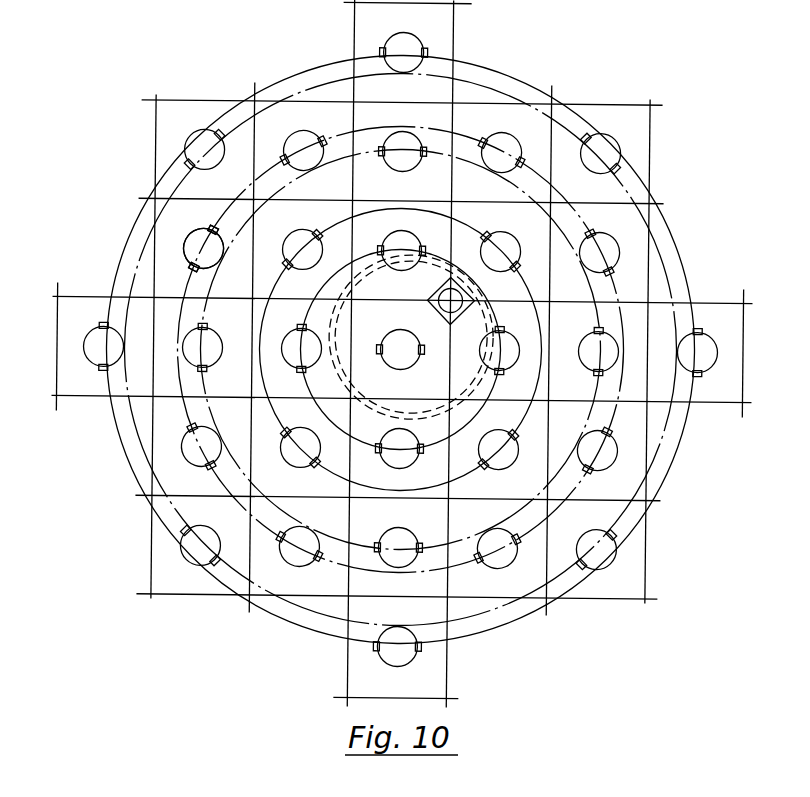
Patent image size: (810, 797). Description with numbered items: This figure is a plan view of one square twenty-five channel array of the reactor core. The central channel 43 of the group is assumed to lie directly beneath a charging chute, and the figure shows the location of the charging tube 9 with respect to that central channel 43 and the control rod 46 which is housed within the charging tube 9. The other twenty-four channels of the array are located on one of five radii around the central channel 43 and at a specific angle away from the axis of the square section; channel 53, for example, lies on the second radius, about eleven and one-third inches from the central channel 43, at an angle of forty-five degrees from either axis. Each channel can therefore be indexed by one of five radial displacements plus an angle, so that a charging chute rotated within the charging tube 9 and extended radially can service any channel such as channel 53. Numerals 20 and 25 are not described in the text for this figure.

The tube 20 is at (203, 228).
The channel 53 is at (508, 236).
The central channel 43 is at (392, 332).
The square housing 25 is at (437, 312).
The control rod 46 is at (437, 293).
The charging tube 9 is at (378, 418).